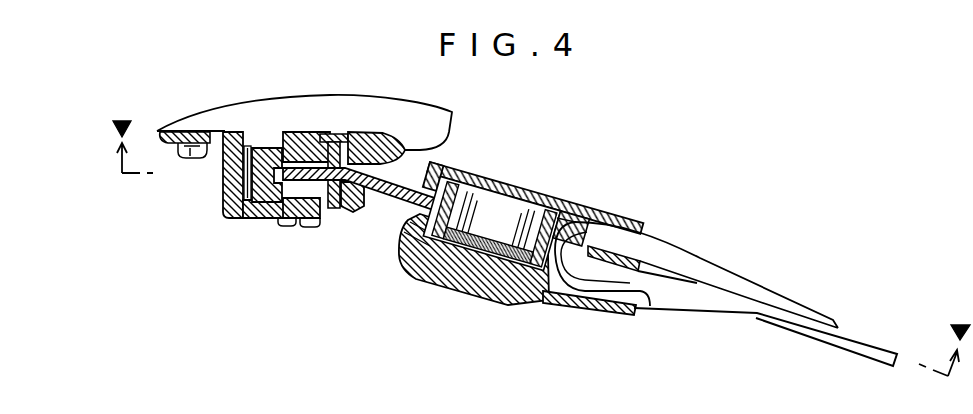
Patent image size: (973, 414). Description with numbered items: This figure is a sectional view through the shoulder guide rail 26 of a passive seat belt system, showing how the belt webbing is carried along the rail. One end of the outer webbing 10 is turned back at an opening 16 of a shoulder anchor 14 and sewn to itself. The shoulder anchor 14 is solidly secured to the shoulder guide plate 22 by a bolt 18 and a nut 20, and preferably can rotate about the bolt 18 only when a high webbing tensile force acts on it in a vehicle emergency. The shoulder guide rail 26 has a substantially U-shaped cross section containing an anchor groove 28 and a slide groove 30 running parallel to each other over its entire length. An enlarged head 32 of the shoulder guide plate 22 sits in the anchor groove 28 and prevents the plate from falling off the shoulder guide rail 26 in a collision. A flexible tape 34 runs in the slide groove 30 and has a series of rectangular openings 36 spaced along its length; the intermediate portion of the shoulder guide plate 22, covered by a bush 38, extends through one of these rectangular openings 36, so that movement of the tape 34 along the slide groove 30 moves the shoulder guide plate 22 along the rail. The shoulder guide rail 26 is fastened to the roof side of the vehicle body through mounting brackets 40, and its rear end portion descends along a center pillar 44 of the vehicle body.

The outer webbing 10 is at (772, 320).
The shoulder anchor 14 is at (648, 300).
The opening 16 is at (580, 248).
The bolt 18 is at (515, 206).
The nut 20 is at (447, 258).
The shoulder guide plate 22 is at (412, 190).
The shoulder guide rail 26 is at (222, 190).
The anchor groove 28 is at (247, 216).
The slide groove 30 is at (325, 222).
The enlarged head 32 is at (262, 150).
The tape 34 is at (337, 157).
The rectangular openings 36 is at (328, 167).
The bush 38 is at (370, 203).
The mounting brackets 40 is at (178, 150).
The center pillar 44 is at (440, 121).